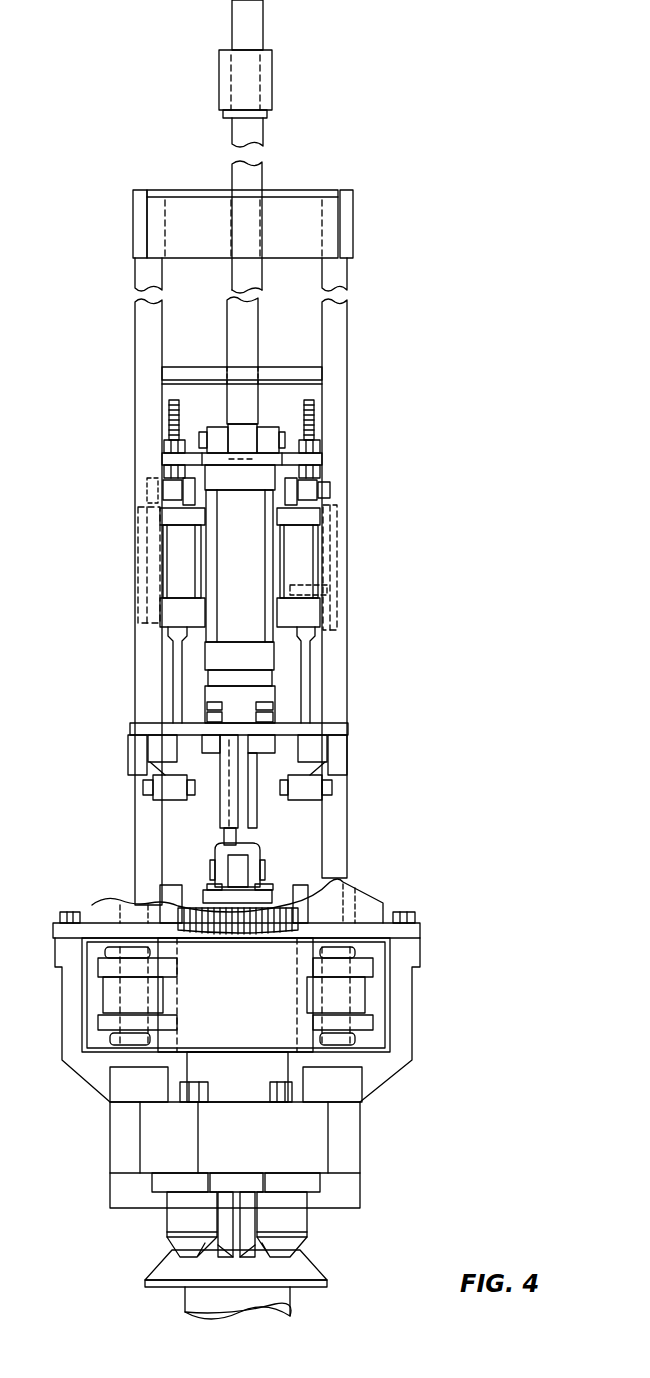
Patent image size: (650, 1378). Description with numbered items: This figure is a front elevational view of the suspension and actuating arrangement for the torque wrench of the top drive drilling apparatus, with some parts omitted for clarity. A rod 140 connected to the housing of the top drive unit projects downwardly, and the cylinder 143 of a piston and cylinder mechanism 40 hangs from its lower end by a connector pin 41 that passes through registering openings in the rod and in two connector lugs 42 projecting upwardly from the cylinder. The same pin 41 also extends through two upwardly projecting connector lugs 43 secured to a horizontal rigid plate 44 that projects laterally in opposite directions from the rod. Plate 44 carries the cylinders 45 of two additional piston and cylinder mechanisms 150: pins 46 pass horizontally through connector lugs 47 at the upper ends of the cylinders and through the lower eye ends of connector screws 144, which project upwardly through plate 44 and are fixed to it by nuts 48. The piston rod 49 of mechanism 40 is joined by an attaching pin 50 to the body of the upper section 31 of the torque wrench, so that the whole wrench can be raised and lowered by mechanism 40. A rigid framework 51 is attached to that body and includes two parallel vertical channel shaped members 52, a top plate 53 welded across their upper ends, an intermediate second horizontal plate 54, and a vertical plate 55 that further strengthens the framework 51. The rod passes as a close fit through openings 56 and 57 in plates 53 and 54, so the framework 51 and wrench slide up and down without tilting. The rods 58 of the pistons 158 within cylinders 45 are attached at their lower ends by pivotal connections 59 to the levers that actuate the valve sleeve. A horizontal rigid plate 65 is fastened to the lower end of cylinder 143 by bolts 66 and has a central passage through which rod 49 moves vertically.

The upper section of the torque wrench 31 is at (415, 932).
The piston and cylinder mechanism 40 is at (263, 560).
The connector pin 41 is at (206, 442).
The connector lugs 42 is at (258, 438).
The connector lugs 43 is at (283, 446).
The horizontal rigid plate 44 is at (296, 460).
The cylinders 45 is at (320, 579).
The pins 46 is at (327, 496).
The connector lugs 47 is at (326, 508).
The nuts 48 is at (320, 446).
The piston rod 49 is at (245, 808).
The attaching pin 50 is at (259, 871).
The rigid framework 51 is at (350, 665).
The channel shaped members 52 is at (346, 800).
The top plate 53 is at (298, 190).
The second horizontal plate 54 is at (174, 368).
The vertical plate 55 is at (338, 231).
The opening 56 is at (236, 190).
The opening 57 is at (228, 376).
The rods 58 is at (311, 697).
The pivotal connections 59 is at (168, 805).
The horizontal rigid plate 65 is at (348, 730).
The bolts 66 is at (212, 700).
The rod 140 is at (250, 320).
The cylinder 143 is at (227, 532).
The connector screws 144 is at (318, 408).
The piston and cylinder mechanisms 150 is at (168, 578).
The pistons 158 is at (315, 606).